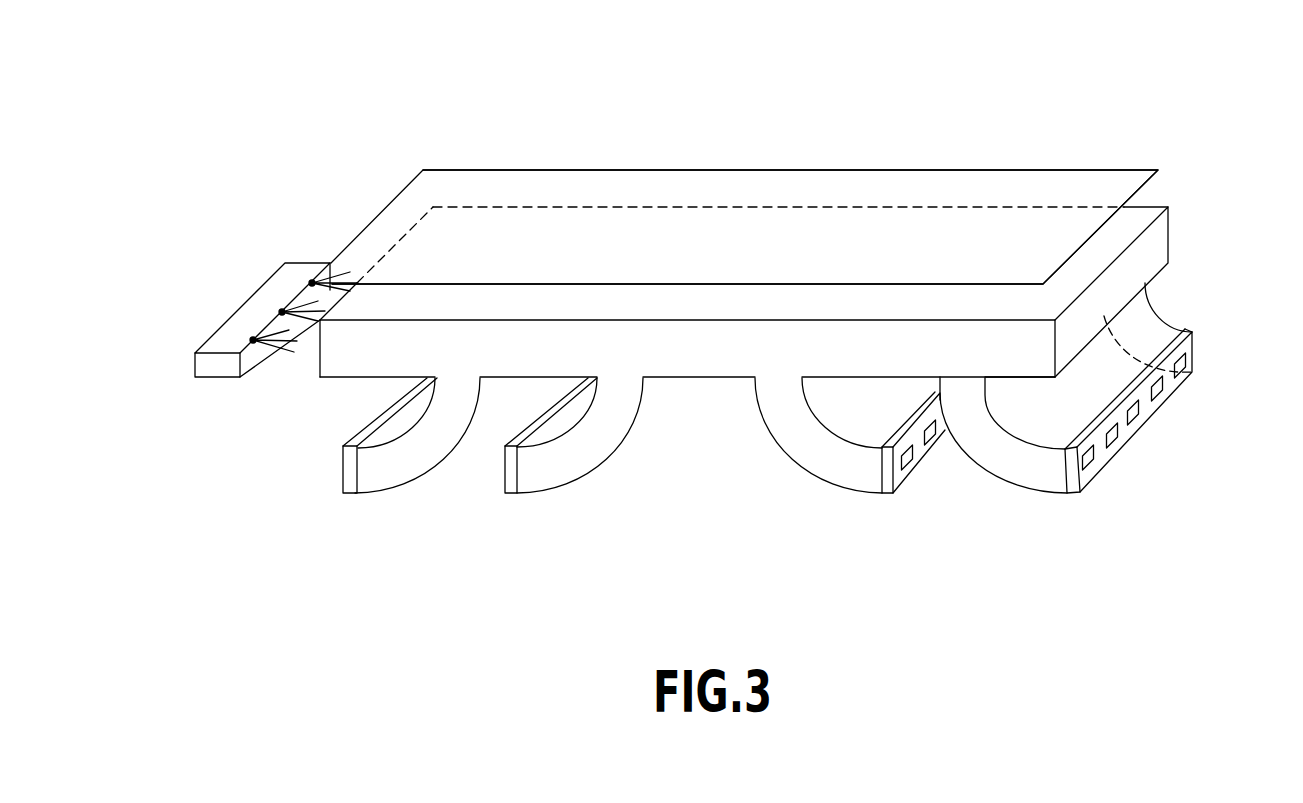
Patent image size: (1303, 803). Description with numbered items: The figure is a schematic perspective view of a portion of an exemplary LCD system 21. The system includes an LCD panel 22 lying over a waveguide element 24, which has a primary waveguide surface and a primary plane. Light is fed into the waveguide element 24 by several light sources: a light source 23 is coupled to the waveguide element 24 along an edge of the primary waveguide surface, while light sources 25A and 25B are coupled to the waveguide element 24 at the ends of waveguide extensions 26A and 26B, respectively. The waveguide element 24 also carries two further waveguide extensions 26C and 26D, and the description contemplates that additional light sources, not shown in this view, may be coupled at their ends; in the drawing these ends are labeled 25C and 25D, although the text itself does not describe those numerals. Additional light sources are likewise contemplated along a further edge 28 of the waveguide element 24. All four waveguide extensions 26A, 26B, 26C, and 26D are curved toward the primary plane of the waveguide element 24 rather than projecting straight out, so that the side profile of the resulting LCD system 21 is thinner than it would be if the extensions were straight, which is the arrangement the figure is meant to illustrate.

The LCD system 21 is at (457, 135).
The LCD panel 22 is at (765, 240).
The light source 23 is at (242, 308).
The waveguide element 24 is at (330, 379).
The light source 25A is at (1145, 418).
The light source 25B is at (927, 453).
The connector 25C is at (510, 492).
The connector 25D is at (343, 482).
The waveguide extension 26A is at (1025, 493).
The waveguide extension 26B is at (827, 485).
The waveguide extension 26C is at (608, 468).
The waveguide extension 26D is at (398, 492).
The edge 28 is at (1170, 250).